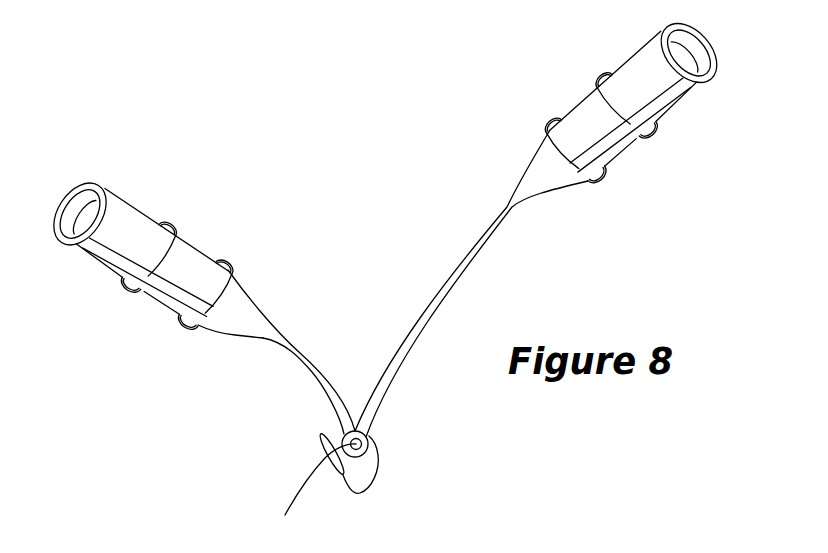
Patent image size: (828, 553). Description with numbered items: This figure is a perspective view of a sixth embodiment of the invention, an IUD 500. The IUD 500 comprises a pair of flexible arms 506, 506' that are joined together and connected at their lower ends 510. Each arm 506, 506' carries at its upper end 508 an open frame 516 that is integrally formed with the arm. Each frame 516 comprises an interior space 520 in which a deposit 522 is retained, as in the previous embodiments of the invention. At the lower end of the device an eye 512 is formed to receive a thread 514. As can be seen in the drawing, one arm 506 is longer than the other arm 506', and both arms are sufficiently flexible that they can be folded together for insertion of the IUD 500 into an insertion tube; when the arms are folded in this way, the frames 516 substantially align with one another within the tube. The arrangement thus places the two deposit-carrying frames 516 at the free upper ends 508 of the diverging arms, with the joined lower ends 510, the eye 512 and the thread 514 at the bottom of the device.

The IUD 500 is at (350, 195).
The flexible arm 506 is at (291, 351).
The flexible arm 506' is at (470, 283).
The upper end 508 is at (225, 338).
The lower ends 510 is at (371, 435).
The eye 512 is at (343, 427).
The thread 514 is at (300, 482).
The open frame 516 is at (660, 108).
The interior space 520 is at (127, 232).
The deposit 522 is at (202, 272).